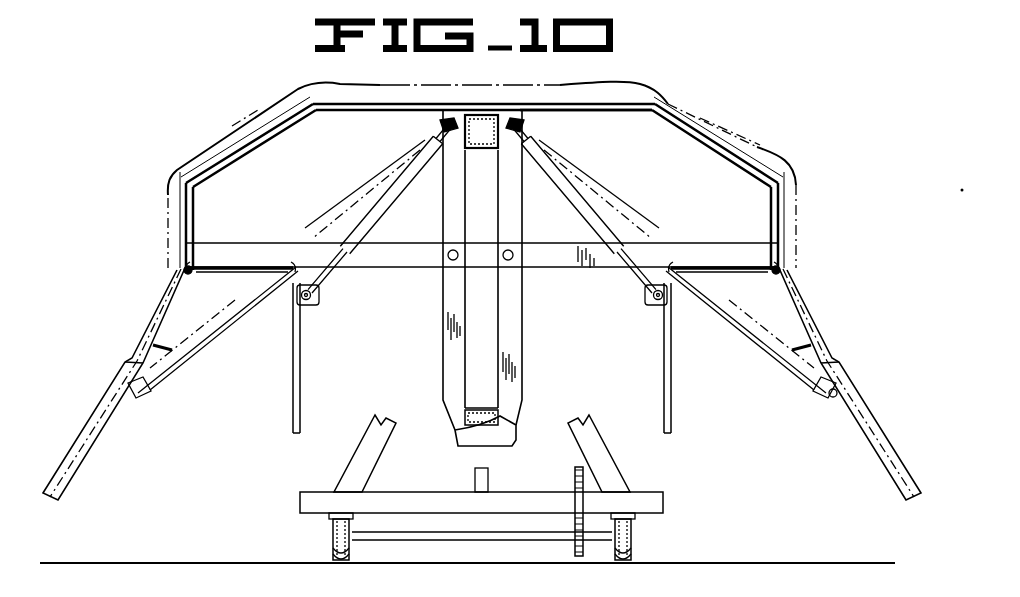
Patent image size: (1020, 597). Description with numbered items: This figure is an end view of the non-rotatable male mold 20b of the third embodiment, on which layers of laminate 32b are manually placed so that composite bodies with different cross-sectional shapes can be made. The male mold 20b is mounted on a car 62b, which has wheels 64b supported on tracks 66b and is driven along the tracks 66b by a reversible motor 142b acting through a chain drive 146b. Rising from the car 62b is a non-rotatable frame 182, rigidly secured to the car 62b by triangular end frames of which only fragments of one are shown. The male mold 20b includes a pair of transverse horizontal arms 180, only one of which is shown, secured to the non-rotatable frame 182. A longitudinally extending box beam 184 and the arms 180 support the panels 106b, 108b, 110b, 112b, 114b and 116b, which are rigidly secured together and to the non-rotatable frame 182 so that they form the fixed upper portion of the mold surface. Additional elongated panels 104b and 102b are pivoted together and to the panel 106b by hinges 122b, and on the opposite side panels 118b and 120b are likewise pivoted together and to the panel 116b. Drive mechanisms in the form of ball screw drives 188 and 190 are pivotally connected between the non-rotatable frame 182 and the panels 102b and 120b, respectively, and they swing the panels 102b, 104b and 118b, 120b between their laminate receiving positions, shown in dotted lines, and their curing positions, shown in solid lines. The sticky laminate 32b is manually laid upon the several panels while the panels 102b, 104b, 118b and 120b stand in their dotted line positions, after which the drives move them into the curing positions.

The male mold 20b is at (684, 110).
The layers of laminate 32b is at (723, 122).
The car 62b is at (313, 492).
The wheels 64b is at (330, 532).
The tracks 66b is at (332, 556).
The panel 102b is at (292, 415).
The panel 104b is at (232, 275).
The panel 106b is at (188, 216).
The panel 108b is at (277, 125).
The panel 110b is at (398, 102).
The panel 112b is at (573, 112).
The panel 114b is at (727, 149).
The panel 116b is at (780, 222).
The panel 118b is at (830, 340).
The panel 120b is at (850, 405).
The hinges 122b is at (292, 266).
The reversible motor 142b is at (618, 477).
The chain drive 146b is at (574, 487).
The transverse horizontal arms 180 is at (566, 262).
The non-rotatable frame 182 is at (450, 198).
The box beam 184 is at (440, 130).
The ball screw drive 188 is at (322, 283).
The ball screw drive 190 is at (648, 290).